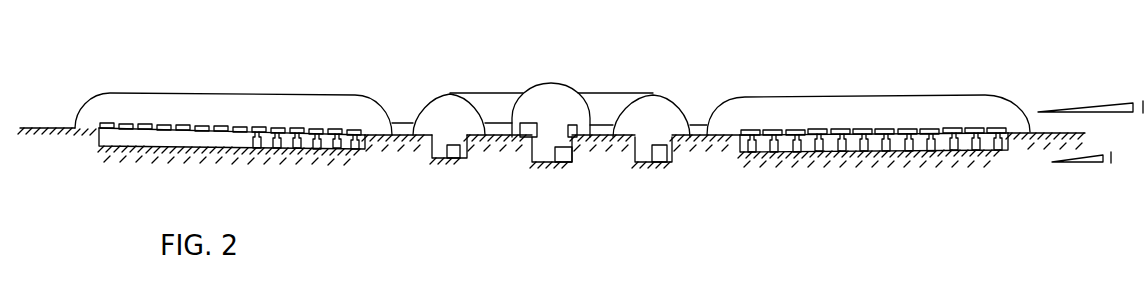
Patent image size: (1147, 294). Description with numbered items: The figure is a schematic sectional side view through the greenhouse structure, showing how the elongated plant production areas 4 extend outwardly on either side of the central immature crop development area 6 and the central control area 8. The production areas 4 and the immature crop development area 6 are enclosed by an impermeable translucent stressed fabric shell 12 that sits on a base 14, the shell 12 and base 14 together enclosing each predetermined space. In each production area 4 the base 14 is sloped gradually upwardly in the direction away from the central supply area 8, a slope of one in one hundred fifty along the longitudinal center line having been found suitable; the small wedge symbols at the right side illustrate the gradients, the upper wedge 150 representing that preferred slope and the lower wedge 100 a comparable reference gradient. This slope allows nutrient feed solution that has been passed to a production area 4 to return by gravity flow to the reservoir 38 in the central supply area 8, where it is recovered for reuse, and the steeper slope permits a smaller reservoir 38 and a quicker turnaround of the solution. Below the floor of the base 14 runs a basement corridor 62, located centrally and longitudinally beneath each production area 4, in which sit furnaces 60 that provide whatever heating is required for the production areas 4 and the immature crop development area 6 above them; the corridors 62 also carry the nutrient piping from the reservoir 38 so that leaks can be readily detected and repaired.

The plant production area 4 is at (234, 117).
The immature crop development area 6 is at (661, 124).
The central control area 8 is at (563, 122).
The stressed fabric shell 12 is at (293, 95).
The base 14 is at (85, 140).
The reservoir 38 is at (561, 157).
The furnace 60 is at (356, 150).
The basement corridor 62 is at (200, 147).
The scale wedge 100 is at (1081, 169).
The scale wedge 150 is at (1090, 117).